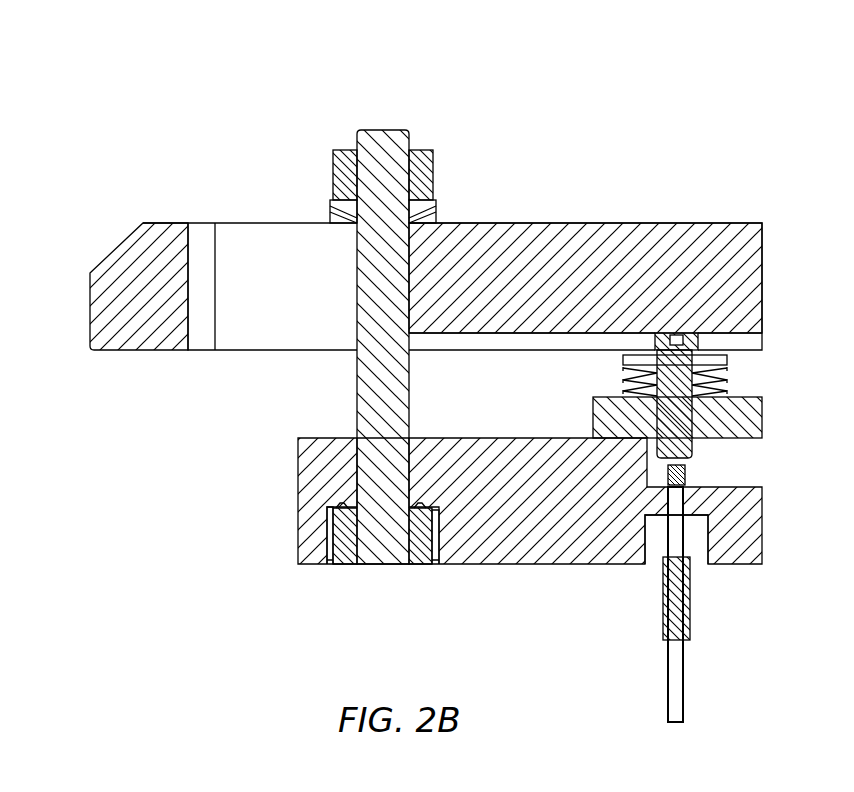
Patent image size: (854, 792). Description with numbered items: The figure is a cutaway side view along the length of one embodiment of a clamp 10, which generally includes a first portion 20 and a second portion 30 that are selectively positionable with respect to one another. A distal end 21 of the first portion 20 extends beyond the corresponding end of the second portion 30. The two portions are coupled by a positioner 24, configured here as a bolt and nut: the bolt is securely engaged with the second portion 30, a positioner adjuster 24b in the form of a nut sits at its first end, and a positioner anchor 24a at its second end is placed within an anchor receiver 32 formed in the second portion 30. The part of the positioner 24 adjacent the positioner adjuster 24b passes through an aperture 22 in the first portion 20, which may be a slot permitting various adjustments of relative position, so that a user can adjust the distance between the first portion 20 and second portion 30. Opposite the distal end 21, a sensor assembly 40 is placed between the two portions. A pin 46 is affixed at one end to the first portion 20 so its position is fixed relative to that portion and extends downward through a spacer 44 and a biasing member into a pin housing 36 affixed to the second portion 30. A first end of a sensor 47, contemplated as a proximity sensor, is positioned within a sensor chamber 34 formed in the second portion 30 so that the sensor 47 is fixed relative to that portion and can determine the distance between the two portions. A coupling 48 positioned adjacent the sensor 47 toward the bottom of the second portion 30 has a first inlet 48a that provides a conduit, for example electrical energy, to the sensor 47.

The clamp 10 is at (549, 92).
The first portion 20 is at (546, 223).
The distal end 21 is at (90, 316).
The aperture 22 is at (281, 245).
The positioner 24 is at (357, 360).
The positioner anchor 24a is at (327, 548).
The positioner adjuster 24b is at (333, 170).
The second portion 30 is at (506, 567).
The anchor receiver 32 is at (437, 565).
The sensor chamber 34 is at (698, 540).
The pin housing 36 is at (593, 400).
The sensor assembly 40 is at (608, 375).
The spacer 44 is at (727, 362).
The pin 46 is at (660, 333).
The sensor 47 is at (685, 478).
The coupling 48 is at (663, 602).
The first inlet 48a is at (683, 705).